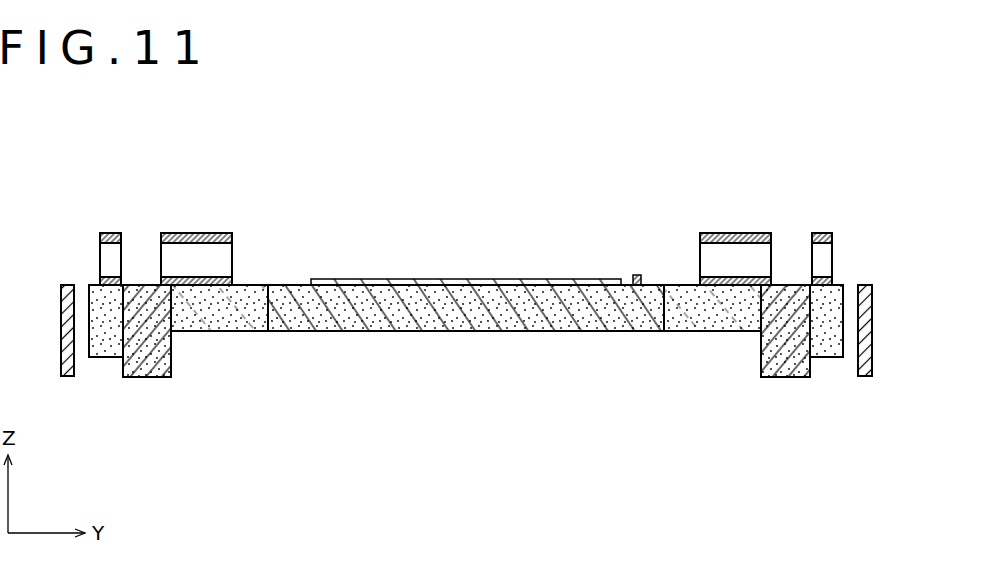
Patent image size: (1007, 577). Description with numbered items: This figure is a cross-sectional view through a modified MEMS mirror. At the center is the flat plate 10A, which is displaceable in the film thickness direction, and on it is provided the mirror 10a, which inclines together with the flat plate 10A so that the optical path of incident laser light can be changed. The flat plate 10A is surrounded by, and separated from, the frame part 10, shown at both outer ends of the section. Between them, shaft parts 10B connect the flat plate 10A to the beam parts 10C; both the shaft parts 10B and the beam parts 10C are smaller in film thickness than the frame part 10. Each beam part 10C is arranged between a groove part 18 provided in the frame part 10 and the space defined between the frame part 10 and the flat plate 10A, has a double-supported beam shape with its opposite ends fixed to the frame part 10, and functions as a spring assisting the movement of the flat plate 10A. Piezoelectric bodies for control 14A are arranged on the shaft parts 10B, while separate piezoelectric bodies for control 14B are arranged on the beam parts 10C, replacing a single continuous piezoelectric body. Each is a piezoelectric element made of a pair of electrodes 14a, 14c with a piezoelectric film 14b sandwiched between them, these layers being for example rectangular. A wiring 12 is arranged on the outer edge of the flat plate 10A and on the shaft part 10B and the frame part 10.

The frame part 10 is at (68, 365).
The flat plate 10A is at (511, 310).
The shaft parts 10B is at (238, 305).
The beam parts 10C is at (112, 333).
The mirror 10a is at (514, 279).
The wiring 12 is at (637, 275).
The piezoelectric bodies for control 14A is at (492, 210).
The piezoelectric bodies for control 14B is at (97, 233).
The electrode 14a is at (232, 281).
The piezoelectric film 14b is at (232, 257).
The electrode 14c is at (232, 237).
The groove part 18 is at (85, 368).